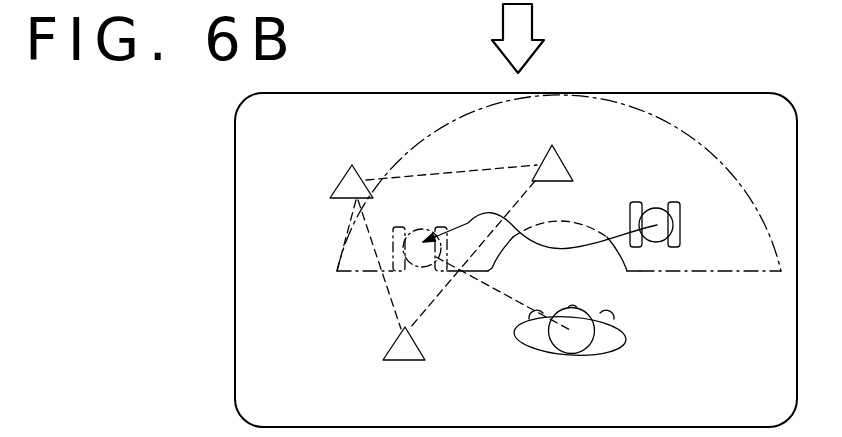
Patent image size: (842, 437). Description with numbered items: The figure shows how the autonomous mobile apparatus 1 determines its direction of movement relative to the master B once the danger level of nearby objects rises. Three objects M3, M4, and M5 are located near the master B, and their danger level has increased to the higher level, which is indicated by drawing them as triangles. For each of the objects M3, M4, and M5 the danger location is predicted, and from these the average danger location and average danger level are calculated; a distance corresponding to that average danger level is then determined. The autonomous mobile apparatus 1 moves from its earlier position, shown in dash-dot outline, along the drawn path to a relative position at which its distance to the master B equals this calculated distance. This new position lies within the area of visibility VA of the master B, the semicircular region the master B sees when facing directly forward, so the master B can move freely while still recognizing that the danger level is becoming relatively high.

The autonomous mobile apparatus 1 is at (403, 225).
The object M3 is at (560, 160).
The object M4 is at (345, 183).
The object M5 is at (427, 352).
The area of visibility VA is at (708, 143).
The master B is at (613, 333).